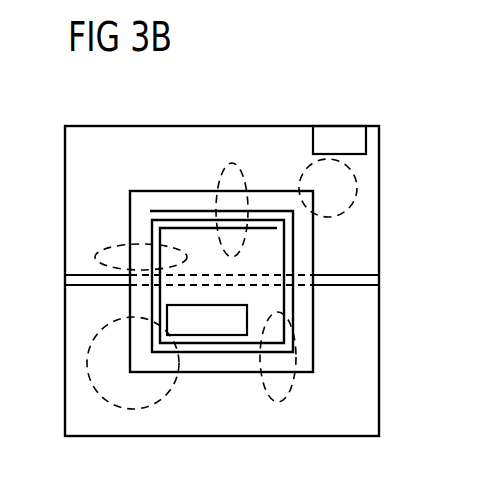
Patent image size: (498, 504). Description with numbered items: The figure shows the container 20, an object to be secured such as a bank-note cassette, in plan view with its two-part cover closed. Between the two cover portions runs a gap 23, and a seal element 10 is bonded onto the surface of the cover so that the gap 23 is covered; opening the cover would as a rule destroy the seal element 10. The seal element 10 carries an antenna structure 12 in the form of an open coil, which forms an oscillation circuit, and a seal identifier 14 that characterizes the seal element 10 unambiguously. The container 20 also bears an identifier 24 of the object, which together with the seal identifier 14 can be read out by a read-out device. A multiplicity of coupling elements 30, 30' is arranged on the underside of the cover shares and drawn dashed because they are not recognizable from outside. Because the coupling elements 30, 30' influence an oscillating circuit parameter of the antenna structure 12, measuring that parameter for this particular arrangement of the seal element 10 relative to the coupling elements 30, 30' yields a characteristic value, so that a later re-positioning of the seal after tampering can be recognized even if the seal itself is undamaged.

The seal element 10 is at (163, 190).
The antenna structure 12 is at (295, 240).
The seal identifier 14 is at (215, 336).
The object to be secured 20 is at (223, 125).
The gap 23 is at (370, 278).
The identifier of the object 24 is at (360, 127).
The coupling element 30 is at (222, 318).
The coupling element 30' is at (276, 395).